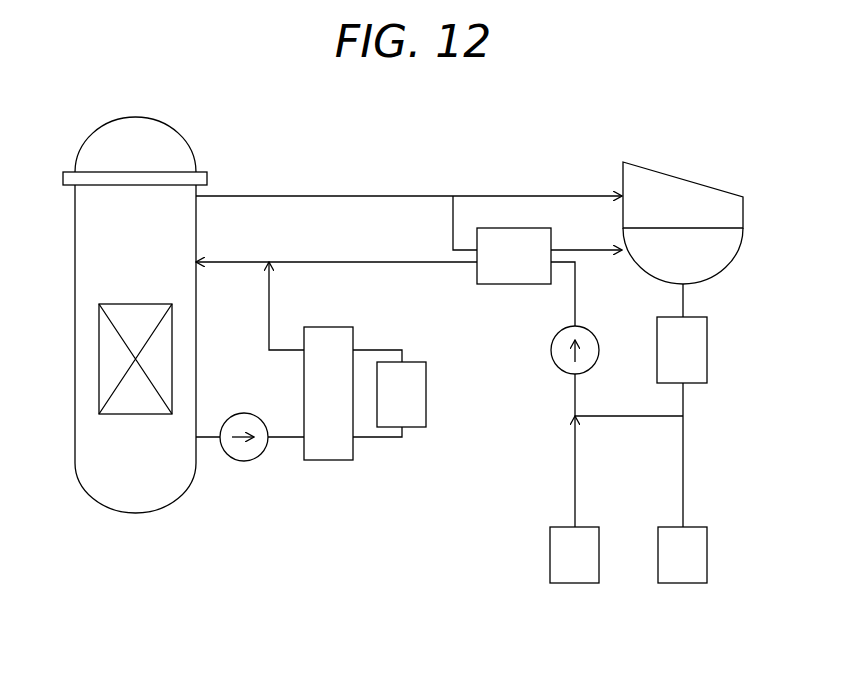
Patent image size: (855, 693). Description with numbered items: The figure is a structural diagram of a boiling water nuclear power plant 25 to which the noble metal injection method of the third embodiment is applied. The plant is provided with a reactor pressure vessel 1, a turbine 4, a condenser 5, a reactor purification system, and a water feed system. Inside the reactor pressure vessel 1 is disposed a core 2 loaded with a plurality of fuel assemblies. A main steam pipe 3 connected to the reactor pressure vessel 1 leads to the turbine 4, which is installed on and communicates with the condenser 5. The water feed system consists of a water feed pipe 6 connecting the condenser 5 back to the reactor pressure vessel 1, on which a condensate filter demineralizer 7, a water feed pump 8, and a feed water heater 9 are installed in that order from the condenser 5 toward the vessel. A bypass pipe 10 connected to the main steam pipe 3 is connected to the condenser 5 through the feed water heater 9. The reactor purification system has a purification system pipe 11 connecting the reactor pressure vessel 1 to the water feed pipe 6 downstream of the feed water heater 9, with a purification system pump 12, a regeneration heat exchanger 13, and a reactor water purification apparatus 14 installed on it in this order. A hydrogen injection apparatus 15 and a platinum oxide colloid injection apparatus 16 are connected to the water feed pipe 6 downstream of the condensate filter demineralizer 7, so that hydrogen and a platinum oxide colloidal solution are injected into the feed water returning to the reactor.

The reactor pressure vessel 1 is at (75, 275).
The core 2 is at (137, 303).
The main steam pipe 3 is at (356, 196).
The turbine 4 is at (743, 212).
The condenser 5 is at (738, 255).
The water feed pipe 6 is at (418, 262).
The condensate filter demineralizer 7 is at (707, 349).
The water feed pump 8 is at (558, 368).
The feed water heater 9 is at (512, 284).
The bypass pipe 10 is at (453, 221).
The purification system pipe 11 is at (286, 437).
The purification system pump 12 is at (243, 461).
The regeneration heat exchanger 13 is at (332, 460).
The reactor water purification apparatus 14 is at (426, 397).
The hydrogen injection apparatus 15 is at (685, 583).
The platinum oxide colloid injection apparatus 16 is at (574, 583).
The boiling water nuclear power plant 25 is at (512, 158).